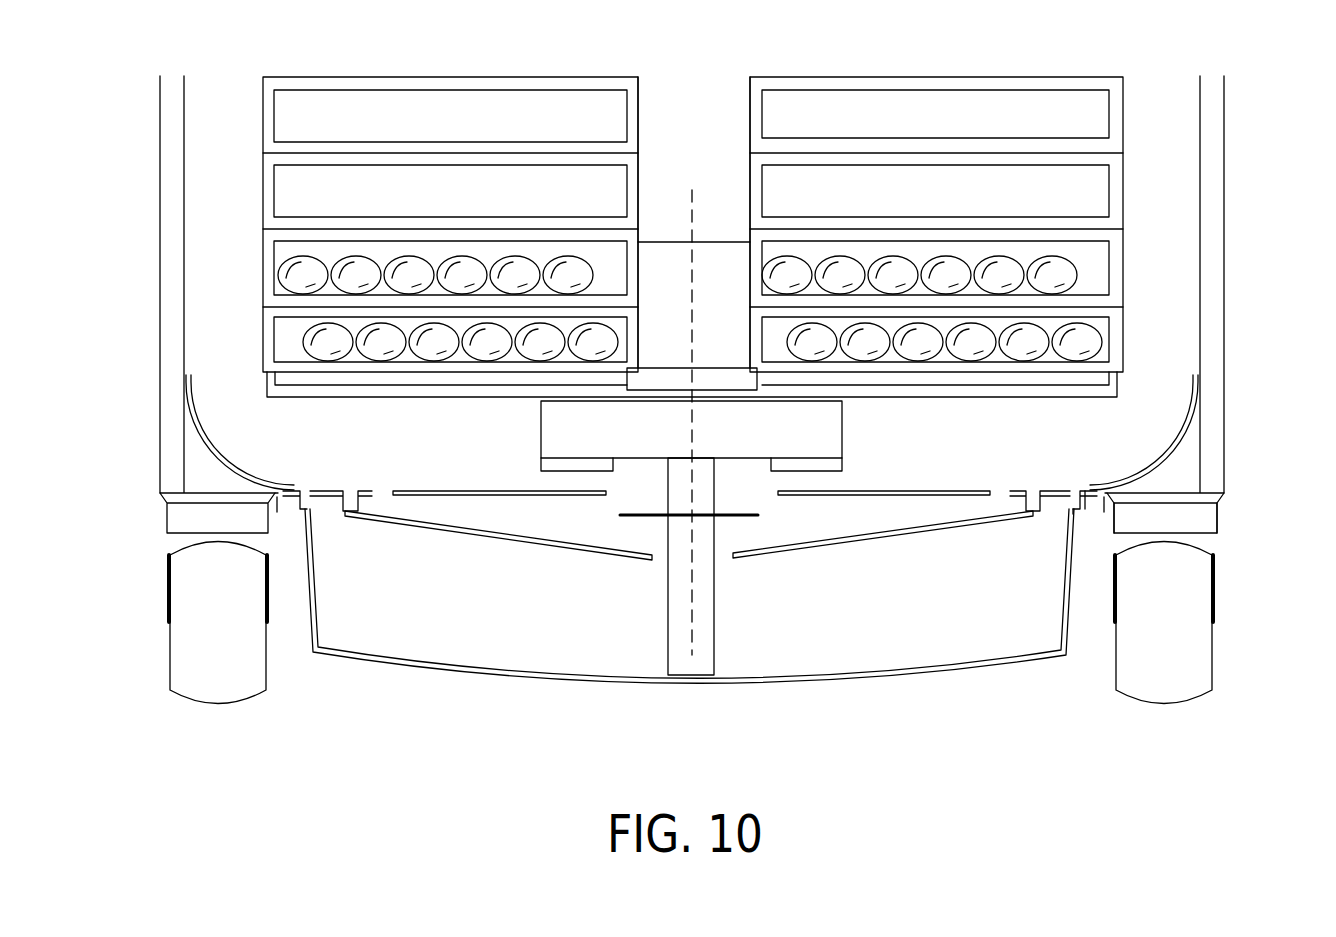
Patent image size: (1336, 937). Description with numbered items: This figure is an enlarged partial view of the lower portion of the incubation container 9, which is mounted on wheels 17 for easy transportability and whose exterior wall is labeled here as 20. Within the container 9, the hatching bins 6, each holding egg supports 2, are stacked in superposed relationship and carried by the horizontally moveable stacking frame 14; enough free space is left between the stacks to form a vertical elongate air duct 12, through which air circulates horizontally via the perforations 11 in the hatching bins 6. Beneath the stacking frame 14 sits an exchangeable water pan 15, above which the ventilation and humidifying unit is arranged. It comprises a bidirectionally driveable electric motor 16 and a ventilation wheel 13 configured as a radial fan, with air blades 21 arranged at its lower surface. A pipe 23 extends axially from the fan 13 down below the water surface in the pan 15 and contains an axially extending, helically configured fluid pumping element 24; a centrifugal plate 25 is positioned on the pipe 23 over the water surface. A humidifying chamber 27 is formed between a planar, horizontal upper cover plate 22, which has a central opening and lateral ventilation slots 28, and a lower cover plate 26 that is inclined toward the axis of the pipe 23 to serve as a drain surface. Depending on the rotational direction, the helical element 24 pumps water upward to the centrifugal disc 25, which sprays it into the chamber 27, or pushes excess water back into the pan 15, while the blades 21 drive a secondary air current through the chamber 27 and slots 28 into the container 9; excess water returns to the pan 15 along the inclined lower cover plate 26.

The egg supports 2 is at (1090, 287).
The hatching bins 6 is at (1053, 188).
The container 9 is at (1213, 473).
The perforations 11 is at (872, 106).
The vertical elongate air duct 12 is at (682, 108).
The ventilation wheel 13 is at (800, 432).
The stacking frame 14 is at (290, 402).
The water pan 15 is at (1072, 582).
The electric motor 16 is at (663, 257).
The wheels 17 is at (1170, 613).
The cabinet frame 20 is at (1170, 200).
The air blades 21 is at (820, 467).
The upper cover plate 22 is at (905, 495).
The pipe 23 is at (713, 660).
The helically configured fluid pumping element 24 is at (690, 587).
The centrifugal plate 25 is at (632, 517).
The lower cover plate 26 is at (1060, 488).
The humidifying chamber 27 is at (832, 520).
The lateral ventilation slots 28 is at (385, 488).